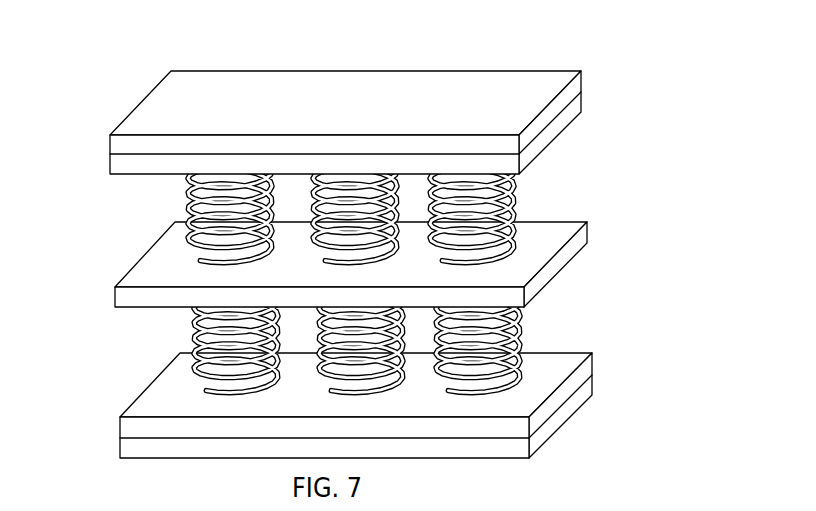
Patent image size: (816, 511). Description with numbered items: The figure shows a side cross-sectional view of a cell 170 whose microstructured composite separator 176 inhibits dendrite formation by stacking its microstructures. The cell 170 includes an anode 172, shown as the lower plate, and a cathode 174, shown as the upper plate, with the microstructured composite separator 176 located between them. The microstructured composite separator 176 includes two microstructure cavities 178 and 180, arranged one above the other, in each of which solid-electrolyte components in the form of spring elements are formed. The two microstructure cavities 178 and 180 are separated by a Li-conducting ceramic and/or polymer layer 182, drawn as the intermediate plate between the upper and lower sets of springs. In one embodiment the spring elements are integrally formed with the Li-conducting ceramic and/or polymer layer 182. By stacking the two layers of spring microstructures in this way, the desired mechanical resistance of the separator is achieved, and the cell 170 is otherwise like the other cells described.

The cell 170 is at (604, 44).
The anode 172 is at (548, 432).
The cathode 174 is at (110, 136).
The microstructured composite separator 176 is at (369, 340).
The microstructure cavity 178 is at (572, 171).
The microstructure cavity 180 is at (128, 366).
The Li-conducting ceramic and/or polymer layer 182 is at (115, 287).